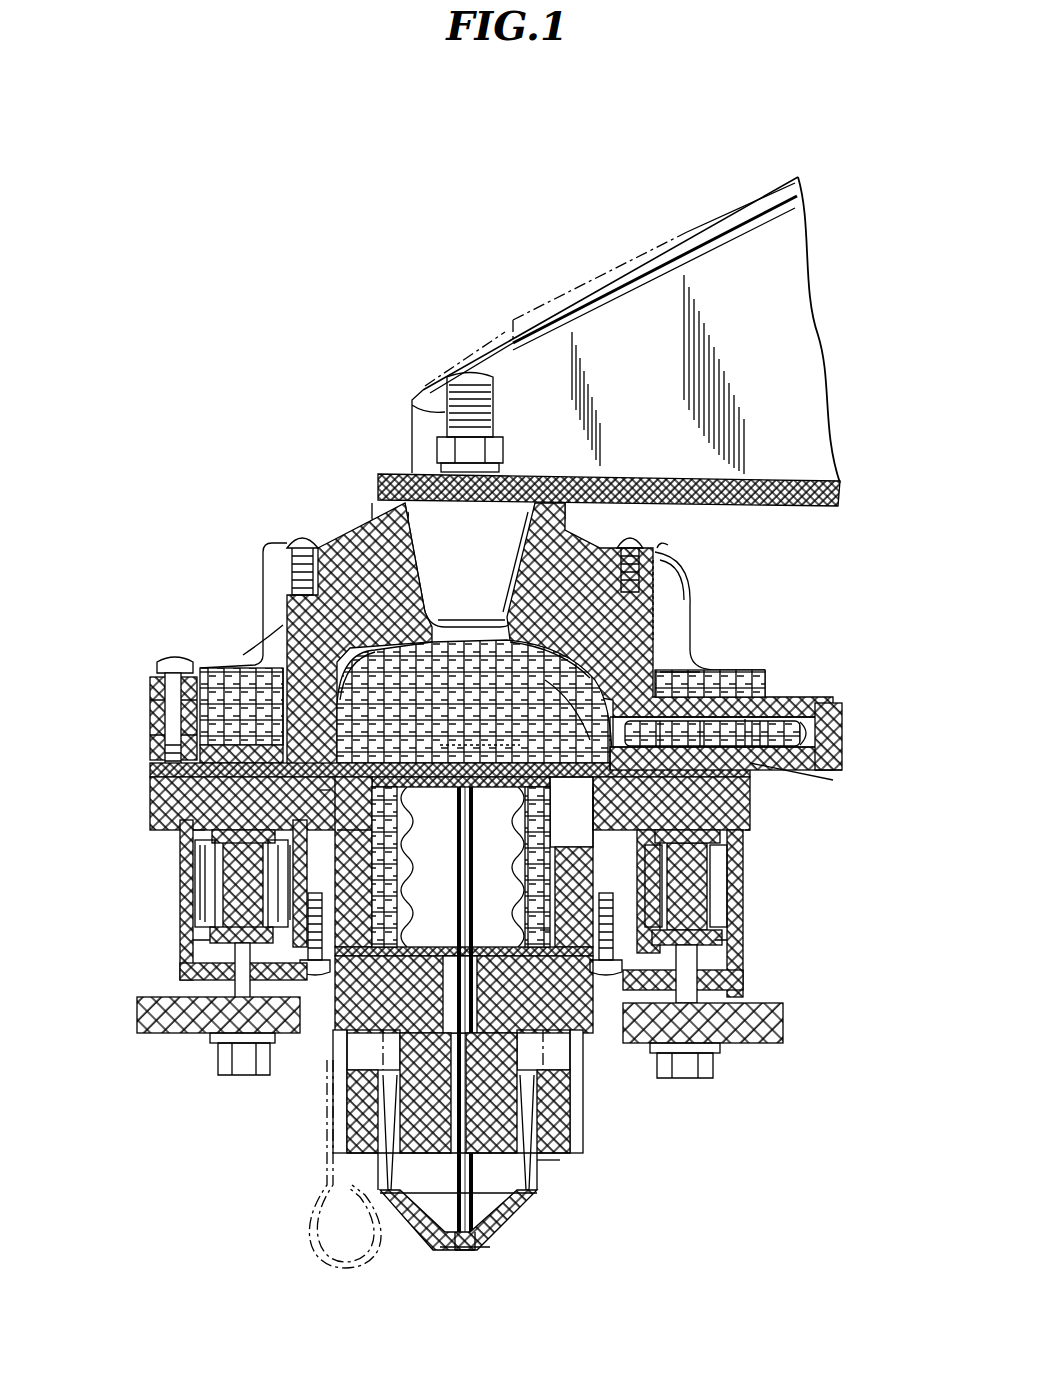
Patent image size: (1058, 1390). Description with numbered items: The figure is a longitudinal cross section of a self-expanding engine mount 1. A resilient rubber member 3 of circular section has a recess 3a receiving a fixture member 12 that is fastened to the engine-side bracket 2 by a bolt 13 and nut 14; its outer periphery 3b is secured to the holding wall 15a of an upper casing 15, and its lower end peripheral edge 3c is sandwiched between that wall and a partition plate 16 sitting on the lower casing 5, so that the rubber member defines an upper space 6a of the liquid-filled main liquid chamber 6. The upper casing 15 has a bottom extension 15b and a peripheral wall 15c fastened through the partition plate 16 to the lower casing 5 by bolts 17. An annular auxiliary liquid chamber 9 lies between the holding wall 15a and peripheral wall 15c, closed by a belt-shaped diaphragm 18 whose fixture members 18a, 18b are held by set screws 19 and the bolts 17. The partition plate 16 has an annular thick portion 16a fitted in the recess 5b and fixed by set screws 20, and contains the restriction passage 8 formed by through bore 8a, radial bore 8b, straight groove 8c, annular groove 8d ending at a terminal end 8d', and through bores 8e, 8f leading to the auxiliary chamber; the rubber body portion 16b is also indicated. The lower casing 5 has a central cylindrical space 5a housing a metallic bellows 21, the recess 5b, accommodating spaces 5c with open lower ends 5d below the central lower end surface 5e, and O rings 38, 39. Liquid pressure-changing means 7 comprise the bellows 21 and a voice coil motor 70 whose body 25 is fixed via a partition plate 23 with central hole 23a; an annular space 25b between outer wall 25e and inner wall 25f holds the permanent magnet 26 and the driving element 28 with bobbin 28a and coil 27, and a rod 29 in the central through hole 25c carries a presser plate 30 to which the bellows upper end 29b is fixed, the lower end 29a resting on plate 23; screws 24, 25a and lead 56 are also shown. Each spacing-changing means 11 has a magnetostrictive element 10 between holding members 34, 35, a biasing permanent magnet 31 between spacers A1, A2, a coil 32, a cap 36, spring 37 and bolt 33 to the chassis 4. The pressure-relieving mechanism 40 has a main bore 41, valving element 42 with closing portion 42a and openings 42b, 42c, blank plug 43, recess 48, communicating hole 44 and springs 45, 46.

The self-expanding engine mount 1 is at (288, 505).
The bracket 2 is at (832, 318).
The resilient rubber member 3 is at (378, 528).
The recess 3a is at (565, 525).
The outer periphery 3b is at (560, 600).
The lower end peripheral edge 3c is at (247, 655).
The chassis 4 is at (180, 1033).
The lower casing 5 is at (755, 812).
The central cylindrical space 5a is at (351, 861).
The annular recess 5b is at (320, 792).
The accommodating space 5c is at (200, 985).
The open lower end 5d is at (190, 975).
The central lower end surface 5e is at (372, 995).
The main liquid chamber 6 is at (676, 640).
The upper space 6a is at (676, 612).
The liquid pressure-changing means 7 is at (515, 1215).
The restriction passage 8 is at (160, 815).
The through bore 8a is at (572, 755).
The bore 8b is at (560, 800).
The straight groove 8c is at (588, 805).
The annular groove 8d is at (796, 835).
The terminal end 8d' is at (156, 846).
The through bore 8e is at (160, 762).
The through bore 8f is at (218, 668).
The auxiliary liquid chamber 9 is at (232, 680).
The magnetostrictive element 10 is at (222, 920).
The spacing-changing means 11 is at (210, 885).
The fixture member 12 is at (430, 510).
The bolt 13 is at (430, 380).
The nut 14 is at (437, 447).
The upper casing 15 is at (665, 665).
The holding wall 15a is at (670, 585).
The bottom extension 15b is at (155, 735).
The peripheral wall 15c is at (152, 705).
The partition plate 16 is at (760, 775).
The annular thick portion 16a is at (405, 738).
The rubber body portion 16b is at (522, 740).
The bolts 17 is at (165, 660).
The diaphragm 18 is at (268, 572).
The fixture member 18a is at (275, 545).
The fixture member 18b is at (152, 683).
The set screws 19 is at (302, 540).
The set screws 20 is at (360, 835).
The metallic bellows 21 is at (540, 872).
The partition plate 23 is at (585, 1080).
The central hole 23a is at (521, 995).
The screw 24 is at (315, 978).
The body 25 is at (585, 1120).
The screw 25a is at (610, 985).
The annular space 25b is at (350, 1115).
The central through hole 25c is at (458, 1093).
The outer wall 25e is at (570, 1160).
The inner wall 25f is at (462, 1255).
The annular permanent magnet 26 is at (555, 1170).
The coil 27 is at (530, 1200).
The driving element 28 is at (480, 1240).
The bobbin 28a is at (458, 1171).
The rod 29 is at (415, 900).
The lower end 29a is at (548, 935).
The upper end 29b is at (470, 745).
The presser plate 30 is at (483, 1016).
The biasing permanent magnet 31 is at (215, 905).
The coil 32 is at (190, 960).
The bolt 33 is at (230, 1078).
The holding member 34 is at (205, 1033).
The holding member 35 is at (200, 862).
The cap 36 is at (160, 1030).
The spring 37 is at (258, 1045).
The O ring 38 is at (165, 785).
The O ring 39 is at (411, 1000).
The pressure-relieving mechanism 40 is at (840, 697).
The main bore 41 is at (815, 780).
The valving element 42 is at (800, 700).
The closing portion 42a is at (735, 668).
The communicating opening 42b is at (715, 695).
The communicating opening 42c is at (765, 675).
The blank plug 43 is at (843, 710).
The communicating hole 44 is at (750, 697).
The spring 45 is at (645, 705).
The spring 46 is at (840, 766).
The cap recess 48 is at (843, 737).
The lead 56 is at (300, 1258).
The voice coil motor 70 is at (583, 1143).
The upper spacer A1 is at (650, 835).
The lower spacer A2 is at (200, 935).